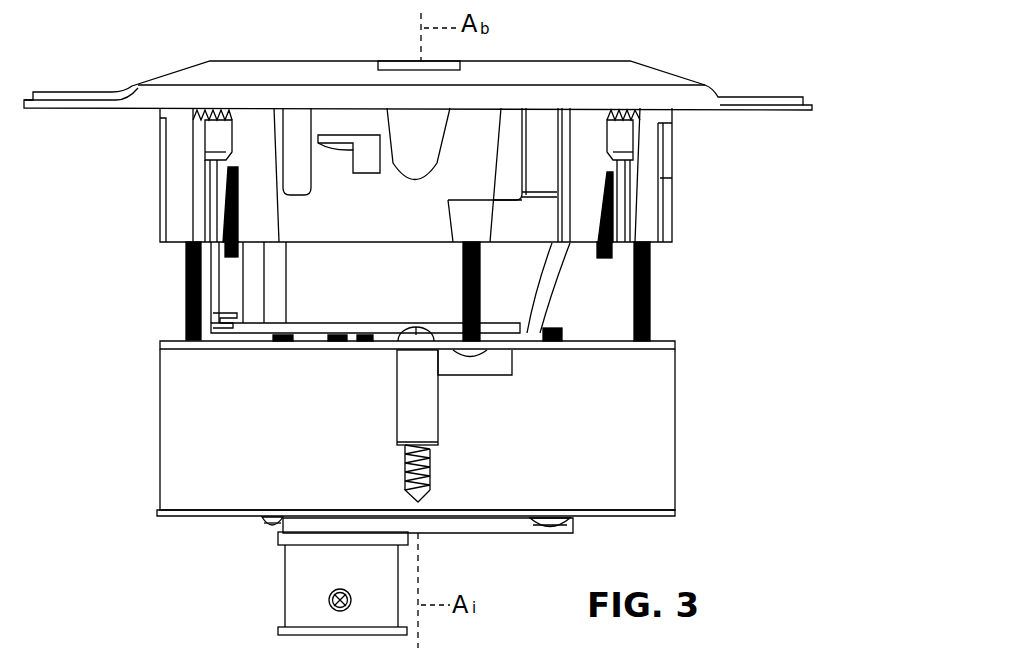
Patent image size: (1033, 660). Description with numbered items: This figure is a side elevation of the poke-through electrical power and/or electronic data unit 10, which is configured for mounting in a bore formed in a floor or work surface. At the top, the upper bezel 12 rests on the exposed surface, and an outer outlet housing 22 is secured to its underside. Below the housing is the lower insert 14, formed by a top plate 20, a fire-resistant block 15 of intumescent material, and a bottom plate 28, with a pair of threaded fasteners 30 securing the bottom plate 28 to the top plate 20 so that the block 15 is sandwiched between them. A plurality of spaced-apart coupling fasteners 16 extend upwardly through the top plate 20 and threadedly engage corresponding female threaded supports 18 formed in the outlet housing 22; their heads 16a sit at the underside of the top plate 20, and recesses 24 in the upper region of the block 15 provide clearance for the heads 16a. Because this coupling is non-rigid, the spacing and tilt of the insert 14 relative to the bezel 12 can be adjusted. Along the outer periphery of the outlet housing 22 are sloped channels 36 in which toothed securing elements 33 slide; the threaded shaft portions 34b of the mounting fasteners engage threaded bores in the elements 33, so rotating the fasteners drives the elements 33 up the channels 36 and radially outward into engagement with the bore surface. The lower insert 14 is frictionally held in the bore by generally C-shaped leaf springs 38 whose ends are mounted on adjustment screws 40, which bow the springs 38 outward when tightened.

The poke-through electrical power and/or electronic data unit 10 is at (768, 46).
The upper bezel 12 is at (147, 84).
The lower insert 14 is at (675, 451).
The fire-resistant block 15 is at (159, 423).
The coupling fastener 16 is at (185, 268).
The fastener head 16a is at (468, 357).
The female threaded support 18 is at (448, 222).
The top plate 20 is at (672, 187).
The outer outlet housing 22 is at (348, 222).
The recess 24 is at (507, 367).
The bottom plate 28 is at (193, 517).
The threaded fastener 30 is at (562, 332).
The toothed securing element 33 is at (212, 140).
The threaded shaft portion 34b is at (238, 254).
The sloped channel 36 is at (208, 191).
The leaf spring 38 is at (386, 404).
The adjustment screw 40 is at (405, 470).